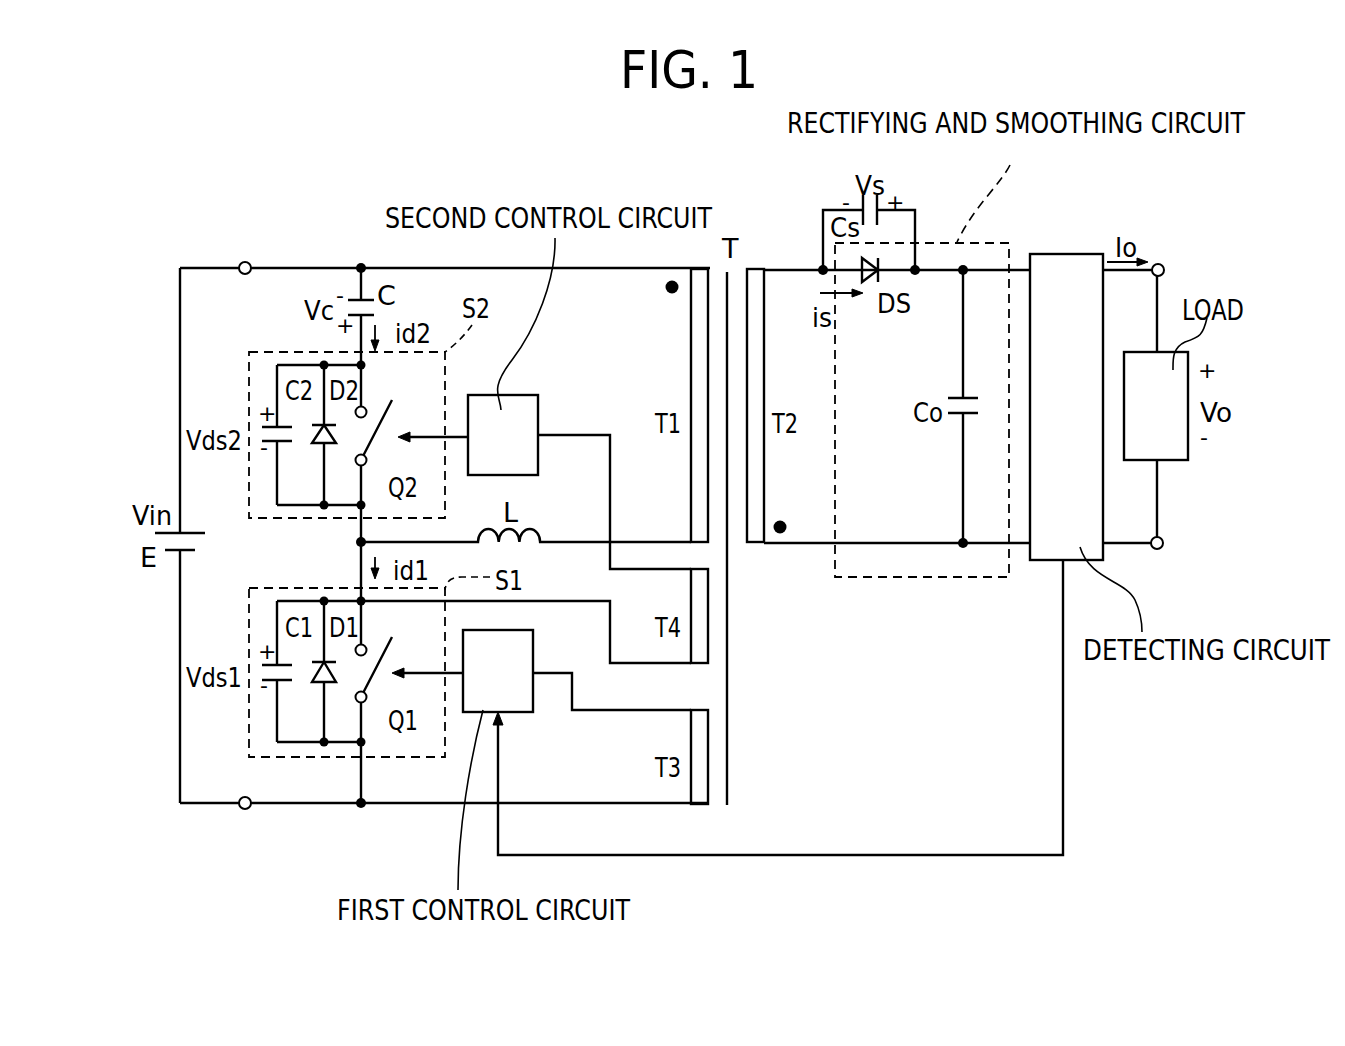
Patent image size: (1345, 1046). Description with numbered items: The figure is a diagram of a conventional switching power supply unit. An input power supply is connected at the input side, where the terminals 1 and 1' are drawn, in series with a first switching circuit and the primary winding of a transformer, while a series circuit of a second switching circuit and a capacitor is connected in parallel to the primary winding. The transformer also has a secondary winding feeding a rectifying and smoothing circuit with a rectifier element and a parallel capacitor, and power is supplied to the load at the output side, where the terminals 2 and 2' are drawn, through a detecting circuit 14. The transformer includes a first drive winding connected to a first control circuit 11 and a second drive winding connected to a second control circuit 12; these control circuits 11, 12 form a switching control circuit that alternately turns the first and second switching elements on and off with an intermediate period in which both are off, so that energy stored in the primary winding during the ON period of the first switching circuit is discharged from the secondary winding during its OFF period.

The input terminal 1 is at (248, 252).
The input terminal 1' is at (250, 820).
The output terminal 2 is at (1161, 258).
The output terminal 2' is at (1162, 561).
The first control circuit 11 is at (533, 640).
The second control circuit 12 is at (538, 398).
The detecting circuit 14 is at (1067, 253).